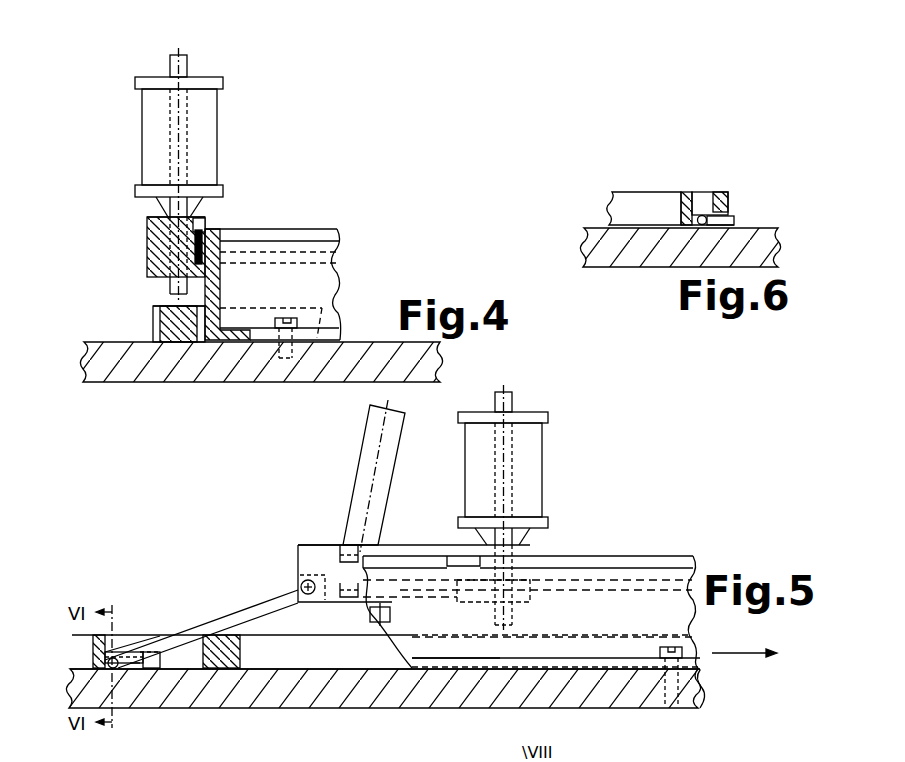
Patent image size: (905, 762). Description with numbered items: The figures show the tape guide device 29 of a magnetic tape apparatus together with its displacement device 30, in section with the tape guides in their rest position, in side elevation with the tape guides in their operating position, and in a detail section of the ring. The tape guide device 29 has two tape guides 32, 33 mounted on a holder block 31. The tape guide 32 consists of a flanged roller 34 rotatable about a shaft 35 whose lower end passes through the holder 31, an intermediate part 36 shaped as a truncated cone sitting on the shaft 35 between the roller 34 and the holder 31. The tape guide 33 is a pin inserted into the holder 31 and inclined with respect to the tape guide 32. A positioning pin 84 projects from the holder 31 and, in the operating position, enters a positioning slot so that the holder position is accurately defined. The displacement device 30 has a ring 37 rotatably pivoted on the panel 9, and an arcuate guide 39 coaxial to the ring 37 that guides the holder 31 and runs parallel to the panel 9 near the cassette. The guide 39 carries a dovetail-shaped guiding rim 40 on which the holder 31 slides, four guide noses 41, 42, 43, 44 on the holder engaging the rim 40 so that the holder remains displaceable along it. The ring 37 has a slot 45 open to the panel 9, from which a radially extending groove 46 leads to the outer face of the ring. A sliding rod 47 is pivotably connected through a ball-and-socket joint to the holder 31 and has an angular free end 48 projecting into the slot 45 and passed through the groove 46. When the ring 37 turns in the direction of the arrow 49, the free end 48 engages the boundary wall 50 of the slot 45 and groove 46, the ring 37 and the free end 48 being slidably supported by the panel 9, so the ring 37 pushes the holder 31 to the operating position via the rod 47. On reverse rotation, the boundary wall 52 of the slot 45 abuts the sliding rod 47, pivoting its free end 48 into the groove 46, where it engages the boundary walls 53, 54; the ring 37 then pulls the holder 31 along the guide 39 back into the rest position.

In FIG. 4, the panel 9 is at (158, 380).
In FIG. 6, the panel 9 is at (622, 260).
In FIG. 5, the panel 9 is at (692, 686).
In FIG. 4, the tape guide device 29 is at (128, 202).
In FIG. 5, the tape guide device 29 is at (288, 515).
In FIG. 4, the displacement device 30 is at (146, 295).
In FIG. 5, the displacement device 30 is at (672, 545).
In FIG. 4, the holder block 31 is at (150, 252).
In FIG. 5, the holder block 31 is at (300, 556).
In FIG. 4, the tape guide 32 is at (234, 123).
In FIG. 5, the tape guide 32 is at (555, 458).
In FIG. 5, the tape guide 33 is at (362, 468).
In FIG. 4, the roller 34 is at (216, 172).
In FIG. 5, the roller 34 is at (472, 470).
In FIG. 4, the shaft 35 is at (186, 65).
In FIG. 5, the shaft 35 is at (512, 402).
In FIG. 4, the intermediate part 36 is at (162, 207).
In FIG. 5, the intermediate part 36 is at (536, 541).
In FIG. 4, the ring 37 is at (160, 322).
In FIG. 6, the ring 37 is at (630, 200).
In FIG. 5, the ring 37 is at (700, 658).
In FIG. 4, the arcuate guide 39 is at (333, 279).
In FIG. 5, the arcuate guide 39 is at (675, 608).
In FIG. 4, the guiding rim 40 is at (203, 252).
In FIG. 5, the guiding rim 40 is at (595, 585).
In FIG. 4, the guide nose 41 is at (206, 222).
In FIG. 5, the guide nose 41 is at (456, 560).
In FIG. 4, the guide nose 42 is at (207, 288).
In FIG. 5, the guide nose 42 is at (462, 588).
In FIG. 5, the guide nose 43 is at (342, 550).
In FIG. 5, the guide nose 44 is at (332, 600).
In FIG. 6, the slot 45 is at (710, 194).
In FIG. 5, the slot 45 is at (168, 636).
In FIG. 6, the groove 46 is at (732, 216).
In FIG. 5, the groove 46 is at (130, 652).
In FIG. 5, the sliding rod 47 is at (265, 602).
In FIG. 6, the angular free end 48 is at (736, 222).
In FIG. 5, the angular free end 48 is at (116, 670).
In FIG. 5, the arrow 49 is at (742, 660).
In FIG. 6, the boundary wall 50 is at (696, 204).
In FIG. 5, the boundary wall 50 is at (108, 652).
In FIG. 5, the boundary wall 52 is at (196, 666).
In FIG. 5, the boundary wall 53 is at (134, 668).
In FIG. 5, the boundary wall 54 is at (156, 668).
In FIG. 5, the positioning pin 84 is at (372, 617).